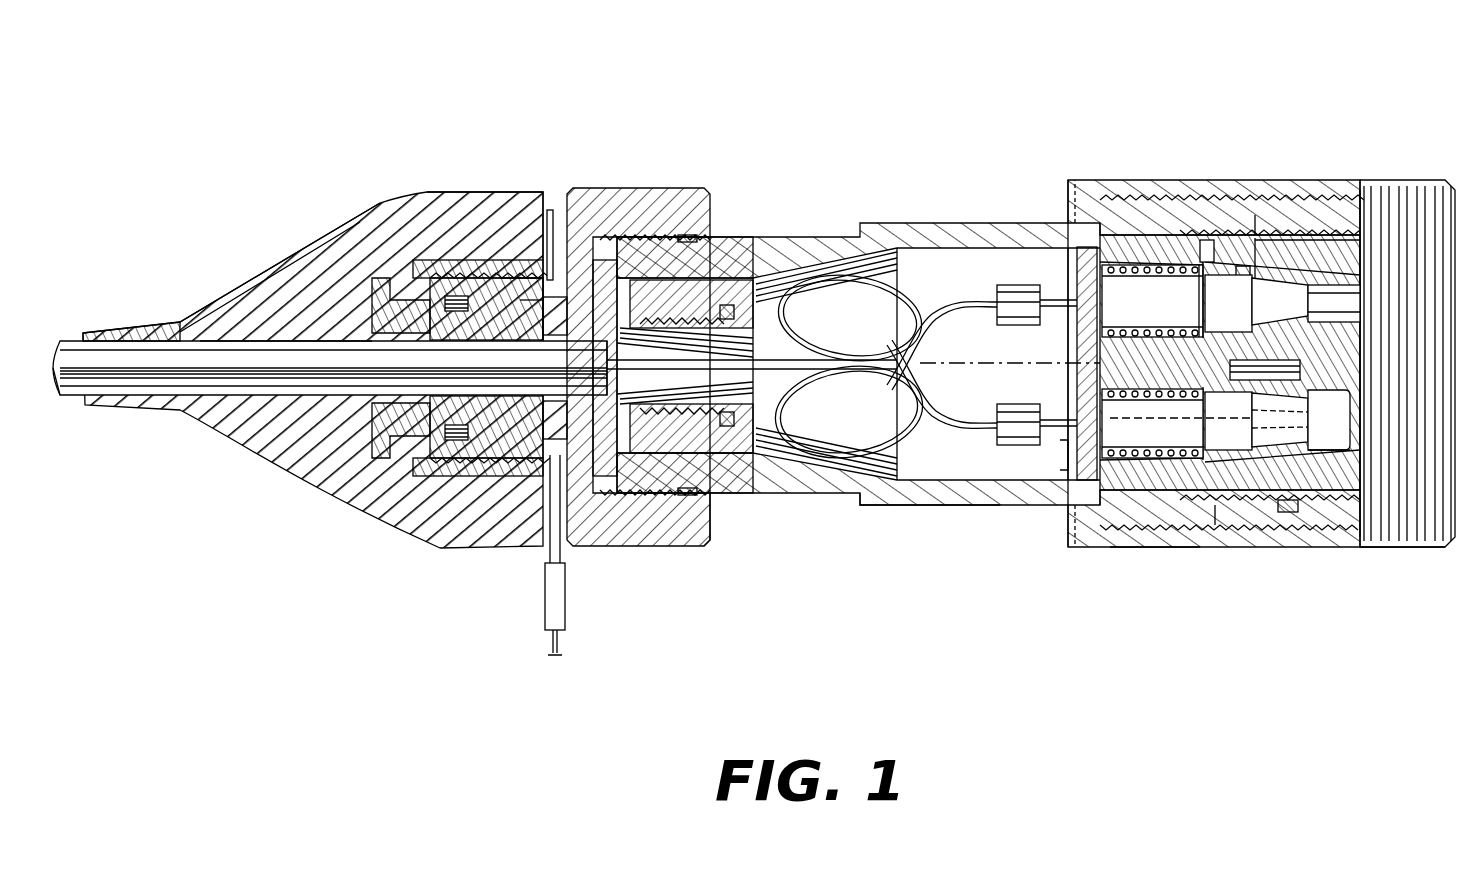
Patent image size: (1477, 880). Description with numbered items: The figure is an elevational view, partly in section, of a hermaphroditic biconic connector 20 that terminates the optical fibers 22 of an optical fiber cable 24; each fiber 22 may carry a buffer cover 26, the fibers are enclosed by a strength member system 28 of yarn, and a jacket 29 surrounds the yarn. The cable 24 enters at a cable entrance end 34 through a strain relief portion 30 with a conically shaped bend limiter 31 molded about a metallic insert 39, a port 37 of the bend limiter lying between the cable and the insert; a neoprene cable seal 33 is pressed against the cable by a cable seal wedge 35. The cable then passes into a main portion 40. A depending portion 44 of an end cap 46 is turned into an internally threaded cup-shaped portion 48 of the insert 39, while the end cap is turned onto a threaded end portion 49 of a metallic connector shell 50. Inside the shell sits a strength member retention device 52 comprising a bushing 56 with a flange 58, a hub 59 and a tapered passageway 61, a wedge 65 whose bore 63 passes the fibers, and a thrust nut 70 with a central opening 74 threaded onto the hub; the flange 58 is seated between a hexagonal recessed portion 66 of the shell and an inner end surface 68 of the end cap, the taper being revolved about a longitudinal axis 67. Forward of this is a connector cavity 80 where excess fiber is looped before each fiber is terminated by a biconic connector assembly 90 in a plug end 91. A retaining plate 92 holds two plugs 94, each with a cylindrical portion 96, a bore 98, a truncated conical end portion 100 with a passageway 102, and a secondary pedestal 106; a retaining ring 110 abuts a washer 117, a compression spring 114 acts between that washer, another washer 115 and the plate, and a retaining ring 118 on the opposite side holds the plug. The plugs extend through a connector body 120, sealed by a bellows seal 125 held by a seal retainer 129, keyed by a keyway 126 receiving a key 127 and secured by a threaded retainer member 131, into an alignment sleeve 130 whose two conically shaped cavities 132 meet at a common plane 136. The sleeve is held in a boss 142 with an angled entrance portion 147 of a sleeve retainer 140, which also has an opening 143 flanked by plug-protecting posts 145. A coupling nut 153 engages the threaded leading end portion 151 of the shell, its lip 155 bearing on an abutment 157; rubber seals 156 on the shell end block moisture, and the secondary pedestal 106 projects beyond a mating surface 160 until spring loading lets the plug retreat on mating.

The hermaphroditic connector 20 is at (911, 73).
The optical fibers 22 is at (922, 332).
The optical fiber cable 24 is at (70, 336).
The buffer cover 26 is at (915, 396).
The strength member system 28 is at (612, 346).
The jacket 29 is at (178, 346).
The strain relief portion 30 is at (352, 208).
The bend limiter 31 is at (268, 282).
The cable seal 33 is at (495, 333).
The cable entrance end 34 is at (490, 184).
The cable seal wedge 35 is at (458, 331).
The port 37 is at (385, 341).
The metallic insert 39 is at (392, 334).
The main portion 40 is at (812, 232).
The depending portion 44 is at (410, 331).
The end cap 46 is at (709, 540).
The cup-shaped portion 48 is at (504, 259).
The end portion 49 is at (660, 520).
The connector shell 50 is at (888, 506).
The strength member retention device 52 is at (738, 279).
The bushing 56 is at (596, 350).
The flange 58 is at (612, 520).
The hub 59 is at (745, 436).
The passageway 61 is at (745, 340).
The bore 63 is at (748, 385).
The wedge 65 is at (745, 397).
The hexagonal recessed portion 66 is at (617, 256).
The longitudinal axis 67 is at (968, 366).
The inner end surface 68 is at (520, 331).
The thrust nut 70 is at (745, 317).
The opening 74 is at (762, 356).
The connector cavity 80 is at (955, 480).
The biconic connector assembly 90 is at (1080, 300).
The plug end 91 is at (1265, 540).
The retaining plate 92 is at (1060, 453).
The plug 94 is at (1164, 415).
The cylindrical portion 96 is at (1146, 315).
The bore 98 is at (1118, 418).
The end portion 100 is at (1285, 312).
The passageway 102 is at (1280, 419).
The secondary pedestal 106 is at (1312, 419).
The retaining ring 110 is at (1207, 304).
The compression spring 114 is at (1118, 273).
The washer 115 is at (1045, 341).
The washer 117 is at (1198, 303).
The retaining ring 118 is at (1040, 300).
The connector body 120 is at (1190, 200).
The bellows seal 125 is at (1225, 250).
The keyway 126 is at (1085, 180).
The key 127 is at (1118, 215).
The seal retainer 129 is at (1230, 250).
The alignment sleeve 130 is at (1330, 250).
The retainer member 131 is at (1255, 220).
The conically shaped cavities 132 is at (1430, 200).
The common plane 136 is at (1345, 296).
The sleeve retainer 140 is at (1300, 242).
The boss 142 is at (1236, 275).
The opening 143 is at (1300, 372).
The plug-protecting posts 145 is at (1338, 456).
The angled entrance portion 147 is at (1400, 232).
The leading end portion 151 is at (1150, 548).
The coupling nut 153 is at (1430, 547).
The lip 155 is at (1068, 200).
The seals 156 is at (1283, 526).
The abutment 157 is at (1075, 535).
The mating surface 160 is at (1295, 491).